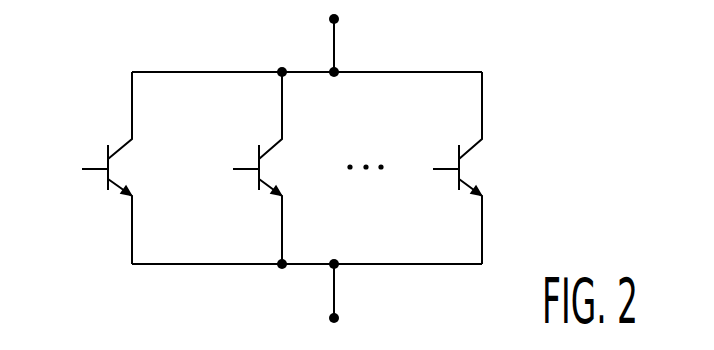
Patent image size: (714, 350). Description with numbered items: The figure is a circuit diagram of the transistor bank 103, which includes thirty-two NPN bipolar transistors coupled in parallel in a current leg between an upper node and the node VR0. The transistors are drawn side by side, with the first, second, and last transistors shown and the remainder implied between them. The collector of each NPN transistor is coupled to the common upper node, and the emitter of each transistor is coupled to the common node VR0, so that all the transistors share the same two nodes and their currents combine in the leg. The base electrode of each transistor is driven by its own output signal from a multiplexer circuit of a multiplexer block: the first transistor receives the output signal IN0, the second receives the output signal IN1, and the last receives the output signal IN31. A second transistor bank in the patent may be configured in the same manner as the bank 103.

The transistor bank 103 is at (375, 16).
The output signal IN0 is at (79, 184).
The output signal IN1 is at (233, 184).
The output signal IN31 is at (429, 184).
The node VR0 is at (358, 299).